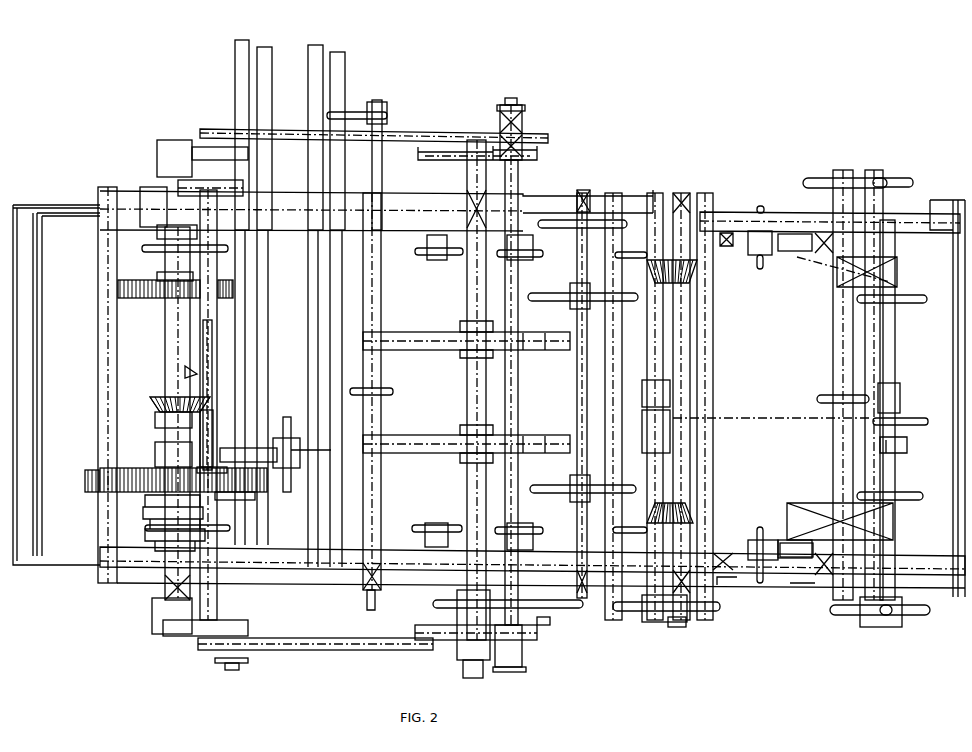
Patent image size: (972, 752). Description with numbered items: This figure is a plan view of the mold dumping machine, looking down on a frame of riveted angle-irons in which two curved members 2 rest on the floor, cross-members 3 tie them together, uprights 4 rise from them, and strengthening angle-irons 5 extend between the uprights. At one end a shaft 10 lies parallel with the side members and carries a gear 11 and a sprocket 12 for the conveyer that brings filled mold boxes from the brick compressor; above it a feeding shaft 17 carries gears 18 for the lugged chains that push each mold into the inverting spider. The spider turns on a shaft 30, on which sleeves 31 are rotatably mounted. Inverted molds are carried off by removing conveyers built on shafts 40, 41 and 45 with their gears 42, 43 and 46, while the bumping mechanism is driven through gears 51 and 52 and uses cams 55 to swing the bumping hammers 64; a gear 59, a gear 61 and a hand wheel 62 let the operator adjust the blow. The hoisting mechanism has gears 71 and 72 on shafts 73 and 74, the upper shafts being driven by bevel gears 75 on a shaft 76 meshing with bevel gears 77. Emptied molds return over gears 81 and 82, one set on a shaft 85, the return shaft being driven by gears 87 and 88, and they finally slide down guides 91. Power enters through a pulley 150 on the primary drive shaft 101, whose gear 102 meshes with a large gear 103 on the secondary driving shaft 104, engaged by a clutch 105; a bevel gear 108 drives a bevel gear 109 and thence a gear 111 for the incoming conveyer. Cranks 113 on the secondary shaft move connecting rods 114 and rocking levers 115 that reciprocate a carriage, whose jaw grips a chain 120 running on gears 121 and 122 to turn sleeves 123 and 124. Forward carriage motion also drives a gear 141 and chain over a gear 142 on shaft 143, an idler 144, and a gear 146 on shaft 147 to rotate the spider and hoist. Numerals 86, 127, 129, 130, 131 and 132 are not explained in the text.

The curved members 2 is at (732, 220).
The cross-members 3 is at (22, 470).
The uprights 4 is at (110, 583).
The angle-irons 5 is at (310, 210).
The shaft 10 is at (240, 496).
The gear 11 is at (213, 458).
The sprocket or gear 12 is at (291, 470).
The shaft 17 is at (427, 245).
The gears 18 is at (150, 251).
The shaft 30 is at (467, 400).
The sleeves 31 is at (440, 603).
The shaft 40 is at (518, 262).
The shaft 41 is at (650, 340).
The gears 42 is at (540, 256).
The gears 43 is at (638, 258).
The shaft 45 is at (898, 468).
The gears 46 is at (648, 305).
The gear 51 is at (815, 178).
The gear 52 is at (890, 180).
The cams 55 is at (897, 270).
The gear 59 is at (820, 396).
The gear 61 is at (393, 391).
The hand wheel 62 is at (400, 114).
The bumping hammers 64 is at (797, 252).
The gears 71 is at (766, 208).
The gears 72 is at (760, 526).
The shafts 73 is at (768, 256).
The shafts 74 is at (790, 543).
The bevel gears 75 is at (685, 280).
The shaft 76 is at (684, 210).
The bevel gears 77 is at (713, 266).
The gears 81 is at (560, 301).
The gears 82 is at (918, 298).
The shaft 85 is at (578, 404).
The post 86 is at (884, 327).
The gear 87 is at (845, 615).
The gear 88 is at (920, 615).
The guides 91 is at (414, 342).
The primary drive shaft 101 is at (218, 265).
The gear 102 is at (215, 495).
The large gear 103 is at (90, 468).
The secondary driving shaft 104 is at (168, 578).
The clutch 105 is at (145, 508).
The bevel gear 108 is at (156, 412).
The bevel gear 109 is at (190, 370).
The gear 111 is at (212, 362).
The cranks 113 is at (190, 148).
The connecting rods 114 is at (288, 130).
The rocking levers 115 is at (455, 158).
The chain 120 is at (800, 420).
The gear 121 is at (648, 392).
The gear 122 is at (912, 418).
The sleeve 123 is at (648, 448).
The sleeve 124 is at (907, 445).
The plate 127 is at (560, 220).
The bearing 129 is at (126, 232).
The collar 130 is at (165, 262).
The gear 131 is at (118, 295).
The pinion 132 is at (236, 289).
The gear 141 is at (640, 608).
The gear 142 is at (715, 608).
The shaft 143 is at (680, 626).
The idler 144 is at (523, 605).
The gear 146 is at (590, 614).
The shaft 147 is at (548, 623).
The pulley or gear 150 is at (180, 186).